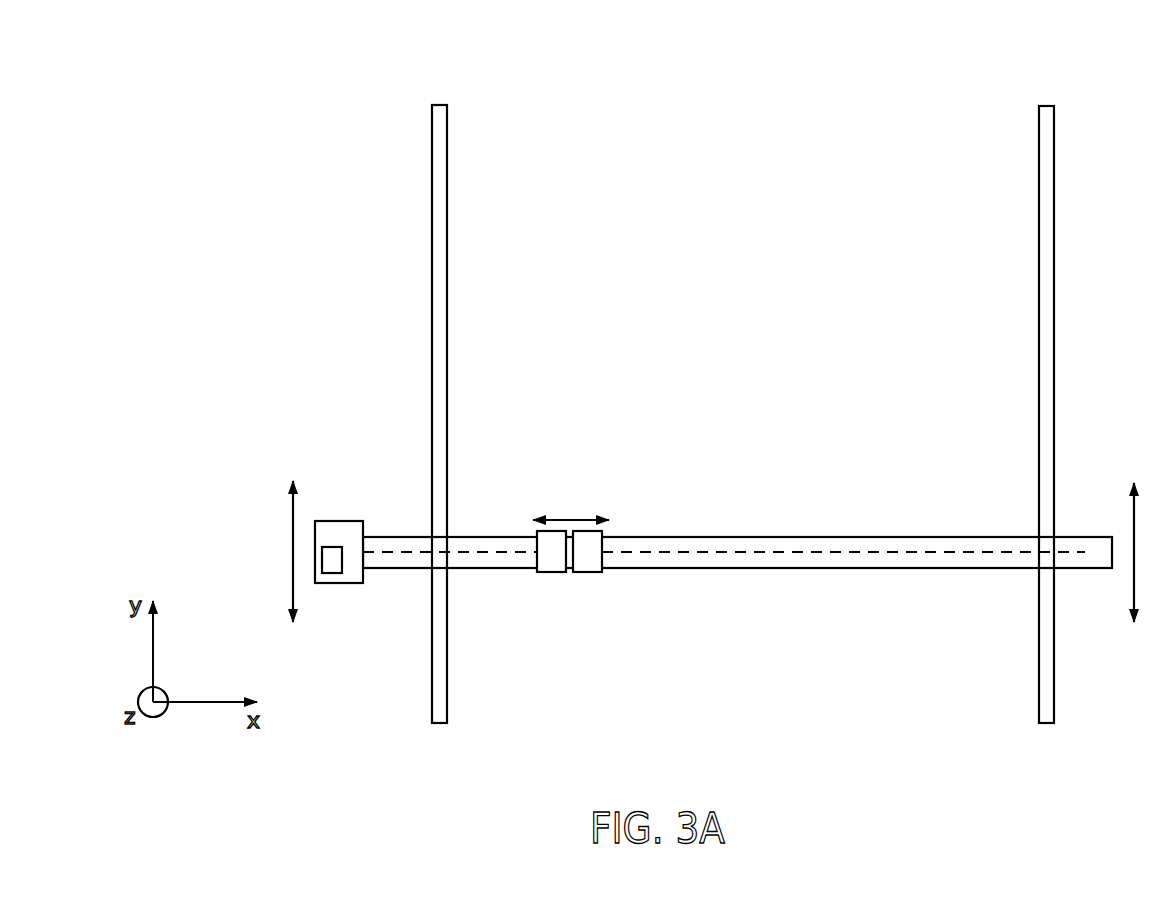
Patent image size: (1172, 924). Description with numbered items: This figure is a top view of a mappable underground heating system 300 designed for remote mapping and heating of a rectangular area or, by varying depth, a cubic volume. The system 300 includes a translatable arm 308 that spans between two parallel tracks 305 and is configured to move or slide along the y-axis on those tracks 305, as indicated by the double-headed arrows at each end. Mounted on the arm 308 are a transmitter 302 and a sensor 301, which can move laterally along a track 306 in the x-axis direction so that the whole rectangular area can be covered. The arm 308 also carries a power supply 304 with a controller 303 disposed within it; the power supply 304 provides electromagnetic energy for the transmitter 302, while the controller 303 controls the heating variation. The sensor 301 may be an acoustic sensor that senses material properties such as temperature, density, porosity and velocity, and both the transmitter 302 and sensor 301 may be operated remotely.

The mappable underground heating system 300 is at (876, 99).
The sensor 301 is at (587, 562).
The transmitter 302 is at (551, 561).
The controller 303 is at (330, 566).
The power supply 304 is at (336, 530).
The tracks 305 is at (440, 260).
The track 306 is at (719, 551).
The translatable arm 308 is at (487, 543).